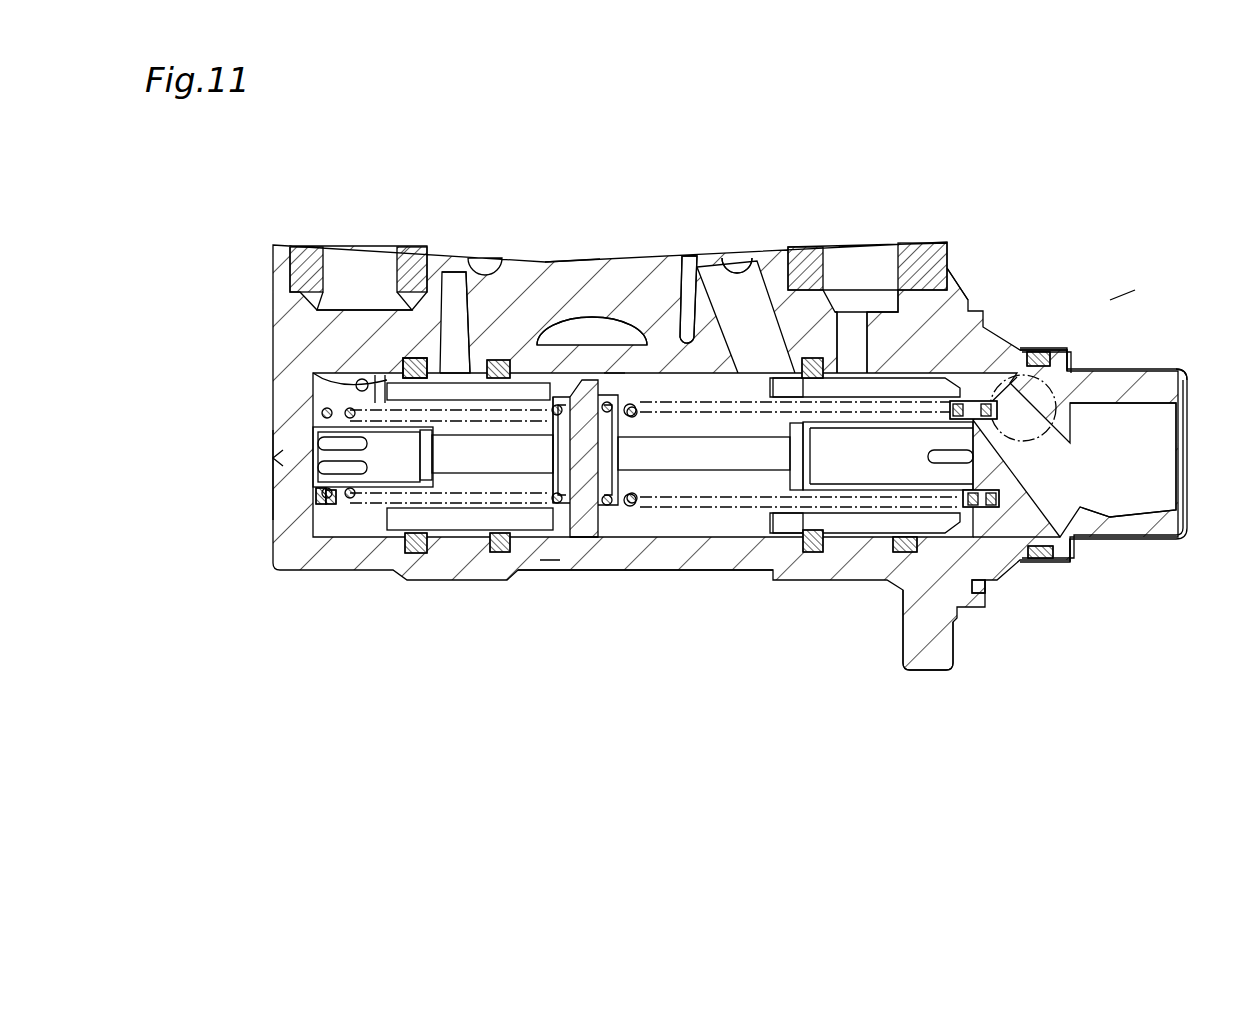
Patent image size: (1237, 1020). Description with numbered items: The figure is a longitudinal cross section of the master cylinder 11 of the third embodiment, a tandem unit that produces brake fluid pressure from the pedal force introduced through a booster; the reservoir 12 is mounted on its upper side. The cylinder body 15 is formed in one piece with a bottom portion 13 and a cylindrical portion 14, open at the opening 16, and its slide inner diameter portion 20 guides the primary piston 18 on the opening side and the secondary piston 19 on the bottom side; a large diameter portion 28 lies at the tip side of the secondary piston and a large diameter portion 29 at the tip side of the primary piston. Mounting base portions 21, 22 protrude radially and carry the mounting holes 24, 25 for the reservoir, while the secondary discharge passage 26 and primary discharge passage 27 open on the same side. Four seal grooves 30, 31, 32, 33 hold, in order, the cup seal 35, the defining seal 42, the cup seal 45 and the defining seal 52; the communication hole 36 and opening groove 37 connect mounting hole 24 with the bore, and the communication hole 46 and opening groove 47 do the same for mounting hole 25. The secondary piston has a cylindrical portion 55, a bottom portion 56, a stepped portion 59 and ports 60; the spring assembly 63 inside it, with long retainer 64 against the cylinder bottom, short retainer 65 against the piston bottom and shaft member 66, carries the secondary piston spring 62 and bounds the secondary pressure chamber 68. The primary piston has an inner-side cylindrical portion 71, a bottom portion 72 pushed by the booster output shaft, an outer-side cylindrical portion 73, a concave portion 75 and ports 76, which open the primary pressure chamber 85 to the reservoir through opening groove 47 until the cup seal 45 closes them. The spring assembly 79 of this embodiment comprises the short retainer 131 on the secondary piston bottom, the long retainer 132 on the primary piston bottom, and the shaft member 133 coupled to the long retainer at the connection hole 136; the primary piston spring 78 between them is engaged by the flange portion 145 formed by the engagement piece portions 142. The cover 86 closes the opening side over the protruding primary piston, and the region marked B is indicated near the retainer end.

The master cylinder 11 is at (1112, 300).
The reservoir 12 is at (915, 292).
The bottom portion 13 is at (278, 477).
The cylindrical portion 14 is at (673, 557).
The cylinder body 15 is at (1007, 589).
The opening 16 is at (1070, 562).
The primary piston 18 is at (1142, 543).
The secondary piston 19 is at (583, 542).
The slide inner diameter portion 20 is at (747, 533).
The mounting base portion 21 is at (518, 267).
The mounting base portion 22 is at (713, 270).
The mounting hole 24 is at (333, 283).
The mounting hole 25 is at (827, 290).
The secondary discharge passage 26 is at (318, 378).
The primary discharge passage 27 is at (613, 370).
The large diameter portion 28 is at (345, 372).
The large diameter portion 29 is at (680, 335).
The seal groove 30 is at (398, 553).
The seal groove 31 is at (488, 555).
The seal groove 32 is at (806, 552).
The seal groove 33 is at (900, 552).
The cup seal 35 is at (420, 556).
The communication hole 36 is at (462, 367).
The opening groove 37 is at (499, 370).
The defining seal 42 is at (503, 553).
The cup seal 45 is at (817, 552).
The communication hole 46 is at (843, 330).
The opening groove 47 is at (885, 307).
The defining seal 52 is at (905, 580).
The cylindrical portion 55 is at (540, 395).
The bottom portion 56 is at (590, 395).
The stepped portion 59 is at (400, 367).
The ports 60 is at (447, 367).
The secondary piston spring 62 is at (325, 504).
The spring assembly 63 is at (333, 508).
The long retainer 64 is at (312, 438).
The short retainer 65 is at (541, 562).
The shaft member 66 is at (462, 460).
The secondary pressure chamber 68 is at (317, 395).
The inner-side cylindrical portion 71 is at (975, 399).
The bottom portion 72 is at (1053, 360).
The outer-side cylindrical portion 73 is at (1105, 383).
The concave portion 75 is at (805, 357).
The ports 76 is at (863, 350).
The primary piston spring 78 is at (628, 507).
The spring assembly 79 is at (937, 512).
The primary pressure chamber 85 is at (640, 345).
The cover 86 is at (1183, 373).
The short retainer 131 is at (600, 540).
The long retainer 132 is at (850, 536).
The shaft member 133 is at (722, 470).
The connection hole 136 is at (798, 553).
The engagement piece portions 142 is at (1022, 562).
The flange portion 145 is at (1030, 352).
The phantom line B is at (1040, 375).